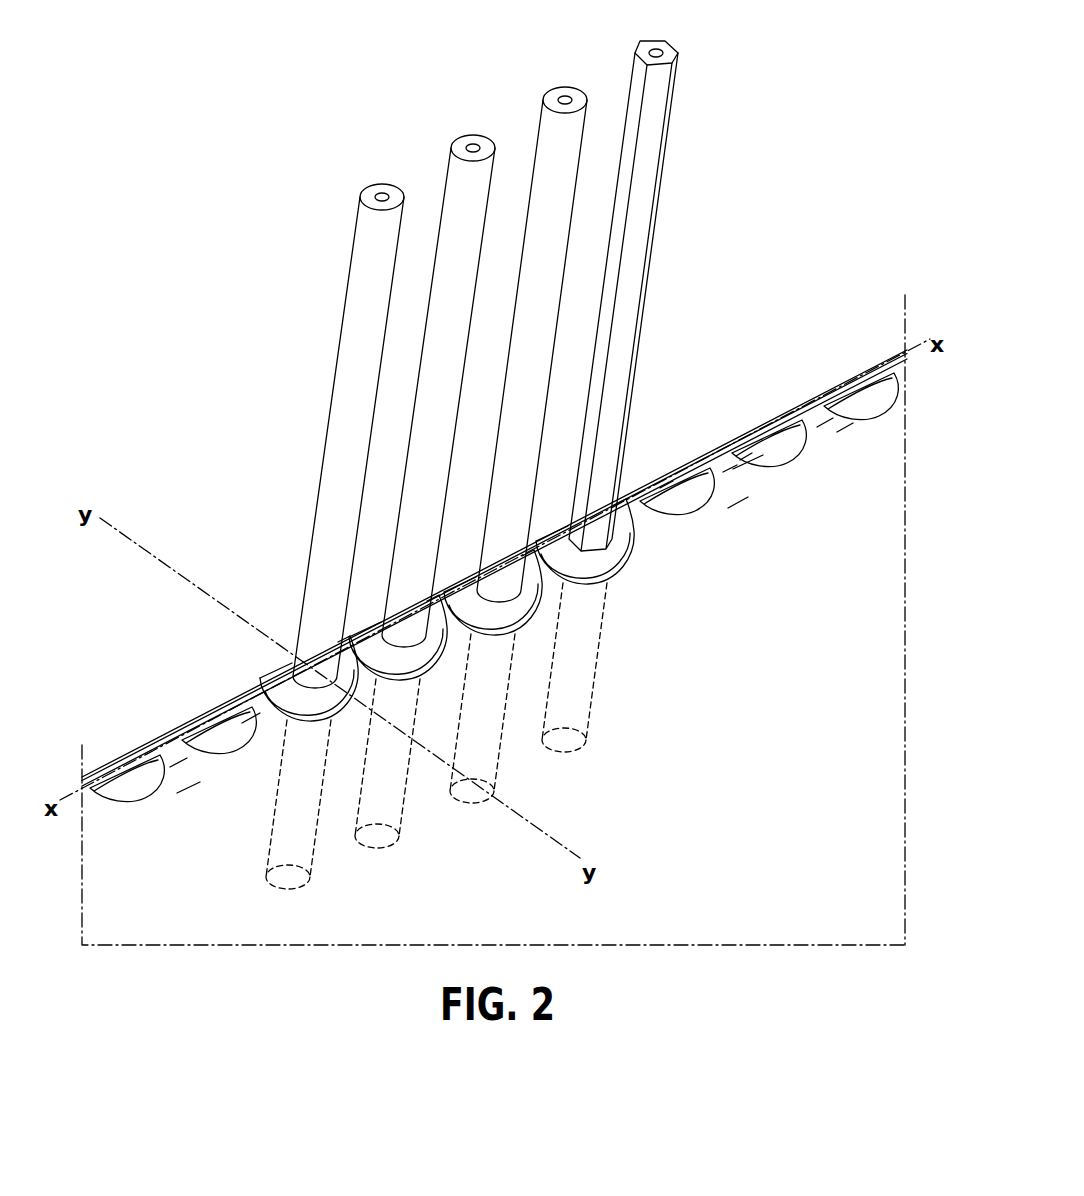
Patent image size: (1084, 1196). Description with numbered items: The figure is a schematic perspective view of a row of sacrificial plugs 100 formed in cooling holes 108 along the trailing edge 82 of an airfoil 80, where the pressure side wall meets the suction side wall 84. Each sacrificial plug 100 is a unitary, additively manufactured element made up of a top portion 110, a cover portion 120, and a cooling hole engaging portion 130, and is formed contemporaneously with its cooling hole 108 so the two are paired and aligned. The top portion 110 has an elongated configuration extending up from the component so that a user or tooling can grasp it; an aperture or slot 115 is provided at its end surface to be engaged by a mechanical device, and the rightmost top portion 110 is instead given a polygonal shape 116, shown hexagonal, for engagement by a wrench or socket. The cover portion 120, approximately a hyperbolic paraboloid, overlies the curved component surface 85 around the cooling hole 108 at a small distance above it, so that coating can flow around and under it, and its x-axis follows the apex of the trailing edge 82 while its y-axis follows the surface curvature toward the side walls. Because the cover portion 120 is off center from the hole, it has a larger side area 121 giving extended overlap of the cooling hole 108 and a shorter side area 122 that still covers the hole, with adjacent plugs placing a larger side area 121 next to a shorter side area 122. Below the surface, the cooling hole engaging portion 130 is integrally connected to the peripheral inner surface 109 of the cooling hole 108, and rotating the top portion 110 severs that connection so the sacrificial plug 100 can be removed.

The airfoil 80 is at (729, 884).
The trailing edge 82 is at (800, 403).
The suction side wall 84 is at (818, 595).
The curved component surface 85 is at (360, 662).
The sacrificial plug 100 is at (282, 290).
The cooling hole 108 is at (153, 790).
The peripheral inner surface 109 is at (268, 842).
The top portion 110 is at (567, 240).
The slot 115 is at (383, 183).
The polygonal shape 116 is at (678, 62).
The cover portion 120 is at (271, 671).
The larger side area 121 is at (258, 682).
The shorter side area 122 is at (303, 605).
The cooling hole engaging portion 130 is at (585, 705).